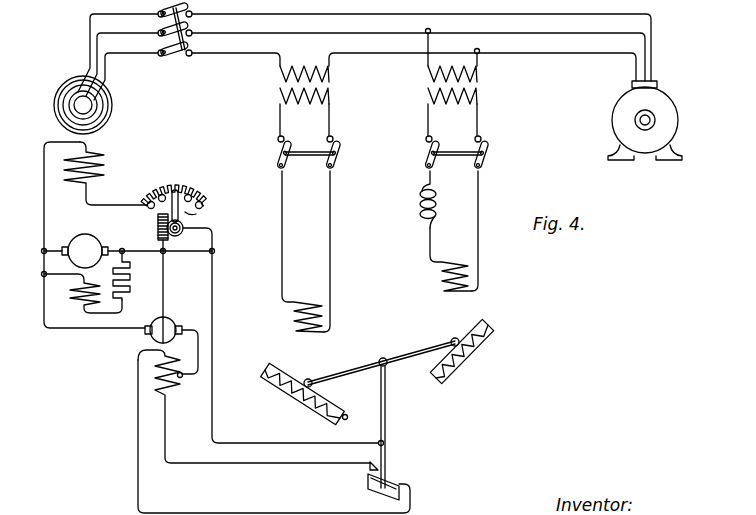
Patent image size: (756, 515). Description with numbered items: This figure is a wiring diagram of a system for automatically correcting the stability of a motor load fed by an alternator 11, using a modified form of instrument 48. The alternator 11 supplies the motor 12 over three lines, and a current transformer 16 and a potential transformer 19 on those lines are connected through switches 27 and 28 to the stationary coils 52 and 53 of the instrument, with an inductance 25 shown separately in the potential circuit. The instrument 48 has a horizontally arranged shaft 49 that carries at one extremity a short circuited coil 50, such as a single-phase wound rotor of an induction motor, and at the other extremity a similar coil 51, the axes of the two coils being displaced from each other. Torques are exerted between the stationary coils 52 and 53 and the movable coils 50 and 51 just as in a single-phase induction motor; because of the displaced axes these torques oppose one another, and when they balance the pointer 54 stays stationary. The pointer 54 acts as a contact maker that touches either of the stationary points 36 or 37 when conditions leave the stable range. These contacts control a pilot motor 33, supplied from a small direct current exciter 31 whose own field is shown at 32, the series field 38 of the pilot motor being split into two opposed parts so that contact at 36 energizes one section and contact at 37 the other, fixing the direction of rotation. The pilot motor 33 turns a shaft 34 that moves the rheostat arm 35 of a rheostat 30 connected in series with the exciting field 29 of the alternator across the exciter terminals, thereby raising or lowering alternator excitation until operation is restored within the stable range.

The alternator 11 is at (64, 90).
The motor 12 is at (676, 100).
The current transformer 16 is at (329, 84).
The potential transformer 19 is at (478, 86).
The inductance 25 is at (418, 211).
The switch 27 is at (342, 154).
The switch 28 is at (488, 153).
The exciting field 29 is at (104, 157).
The rheostat 30 is at (178, 182).
The direct current exciter 31 is at (83, 235).
The exciter field 32 is at (68, 298).
The pilot motor 33 is at (150, 338).
The shaft 34 is at (165, 285).
The rheostat arm 35 is at (196, 214).
The stationary contact point 36 is at (368, 469).
The stationary contact point 37 is at (396, 480).
The series field 38 is at (153, 375).
The instrument 48 is at (381, 369).
The shaft 49 is at (384, 357).
The short circuited coil 50 is at (290, 361).
The short circuited coil 51 is at (483, 319).
The stationary coil 52 is at (305, 300).
The stationary coil 53 is at (452, 262).
The pointer 54 is at (390, 417).